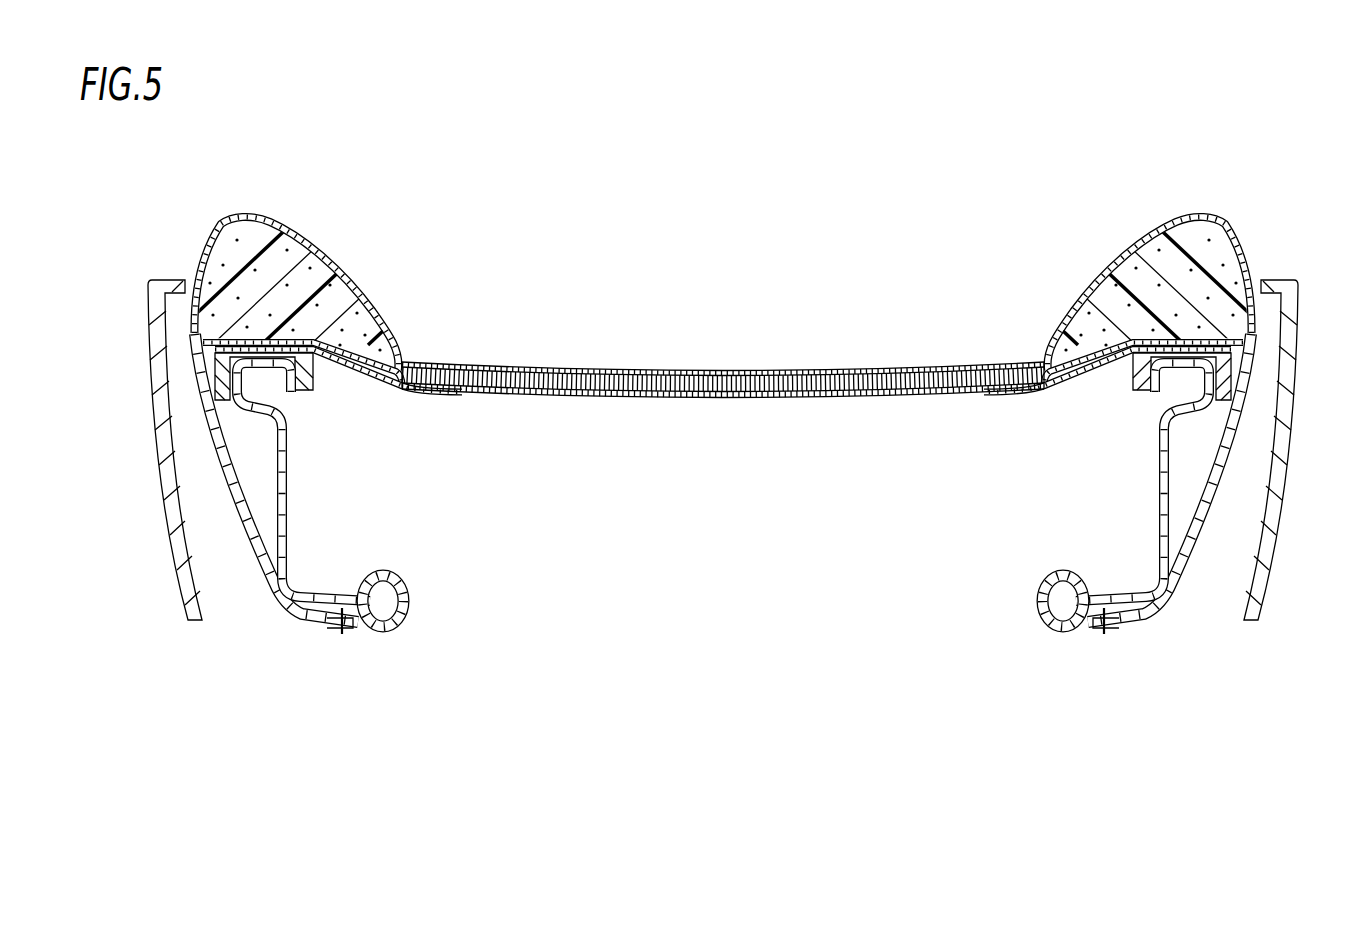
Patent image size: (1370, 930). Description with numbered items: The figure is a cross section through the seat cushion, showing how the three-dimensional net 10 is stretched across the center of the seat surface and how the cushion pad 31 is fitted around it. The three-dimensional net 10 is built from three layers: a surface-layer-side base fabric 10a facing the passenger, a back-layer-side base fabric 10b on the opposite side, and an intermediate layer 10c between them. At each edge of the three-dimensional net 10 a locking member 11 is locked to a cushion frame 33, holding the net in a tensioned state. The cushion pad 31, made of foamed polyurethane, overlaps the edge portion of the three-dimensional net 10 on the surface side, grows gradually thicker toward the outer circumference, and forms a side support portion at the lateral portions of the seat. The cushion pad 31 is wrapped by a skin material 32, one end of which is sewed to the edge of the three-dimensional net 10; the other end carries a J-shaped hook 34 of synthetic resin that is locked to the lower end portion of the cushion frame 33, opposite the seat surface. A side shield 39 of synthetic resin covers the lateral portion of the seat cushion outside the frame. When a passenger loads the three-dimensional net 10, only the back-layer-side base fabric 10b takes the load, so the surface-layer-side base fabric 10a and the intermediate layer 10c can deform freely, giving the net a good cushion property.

The three-dimensional net 10 is at (723, 375).
The surface-layer-side base fabric 10a is at (637, 372).
The back-layer-side base fabric 10b is at (727, 400).
The intermediate layer 10c is at (595, 380).
The locking member 11 is at (313, 378).
The cushion pad 31 is at (279, 245).
The skin material 32 is at (229, 215).
The cushion frame 33 is at (288, 512).
The J-shaped hook 34 is at (398, 617).
The side shield 39 is at (162, 452).